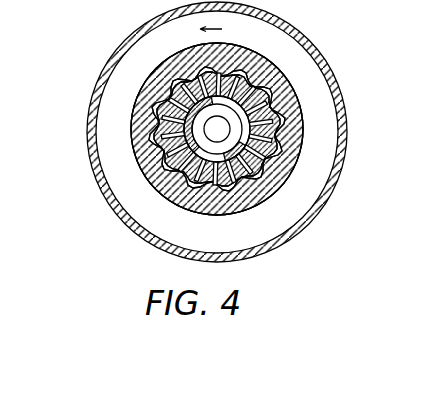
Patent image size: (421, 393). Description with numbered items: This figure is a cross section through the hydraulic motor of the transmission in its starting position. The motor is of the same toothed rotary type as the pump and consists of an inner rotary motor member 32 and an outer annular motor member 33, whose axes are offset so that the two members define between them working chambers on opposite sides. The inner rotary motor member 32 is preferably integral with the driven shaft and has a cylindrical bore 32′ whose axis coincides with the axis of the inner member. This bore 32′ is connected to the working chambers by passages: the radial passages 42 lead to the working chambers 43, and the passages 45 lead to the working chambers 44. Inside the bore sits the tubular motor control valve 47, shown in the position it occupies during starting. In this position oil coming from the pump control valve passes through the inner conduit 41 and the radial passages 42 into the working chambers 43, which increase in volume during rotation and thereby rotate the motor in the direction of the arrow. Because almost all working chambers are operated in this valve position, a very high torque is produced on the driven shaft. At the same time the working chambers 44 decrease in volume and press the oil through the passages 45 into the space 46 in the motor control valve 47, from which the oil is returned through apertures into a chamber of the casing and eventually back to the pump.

The inner conduit 41 is at (275, 115).
The radial passages 42 is at (265, 56).
The working chambers 43 is at (258, 77).
The inner rotary motor member 32 is at (286, 144).
The outer annular motor member 33 is at (283, 172).
The bore 32′ is at (257, 180).
The working chambers 44 is at (156, 134).
The passages 45 is at (172, 157).
The space 46 is at (145, 184).
The tubular motor control valve 47 is at (173, 203).